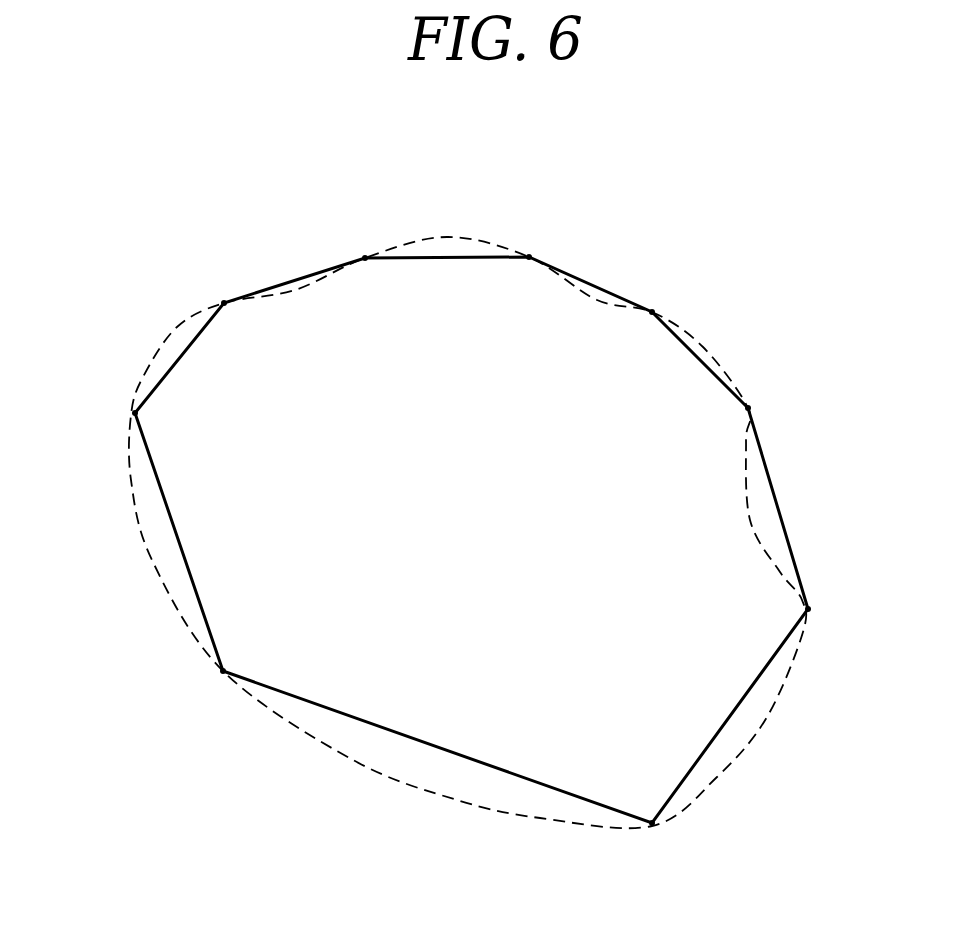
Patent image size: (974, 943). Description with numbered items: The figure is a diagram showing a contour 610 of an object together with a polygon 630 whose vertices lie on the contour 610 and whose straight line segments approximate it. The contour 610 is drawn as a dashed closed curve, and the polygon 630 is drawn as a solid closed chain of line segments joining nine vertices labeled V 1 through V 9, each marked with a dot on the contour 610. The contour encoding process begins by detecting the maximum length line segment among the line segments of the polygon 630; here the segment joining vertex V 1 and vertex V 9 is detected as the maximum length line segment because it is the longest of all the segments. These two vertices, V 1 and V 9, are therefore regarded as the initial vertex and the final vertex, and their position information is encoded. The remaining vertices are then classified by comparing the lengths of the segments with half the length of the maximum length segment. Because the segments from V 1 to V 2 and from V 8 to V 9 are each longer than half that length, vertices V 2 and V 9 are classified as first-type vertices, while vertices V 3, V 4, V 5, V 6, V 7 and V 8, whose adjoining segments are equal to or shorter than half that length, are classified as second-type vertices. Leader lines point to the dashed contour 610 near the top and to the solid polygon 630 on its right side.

The contour 610 is at (450, 238).
The polygon 630 is at (777, 502).
The vertex V1 1 is at (202, 689).
The vertex V2 2 is at (111, 415).
The vertex V3 3 is at (203, 280).
The vertex V4 4 is at (349, 232).
The vertex V5 5 is at (539, 239).
The vertex V6 6 is at (672, 293).
The vertex V7 7 is at (770, 399).
The vertex V8 8 is at (832, 615).
The vertex V9 9 is at (663, 847).